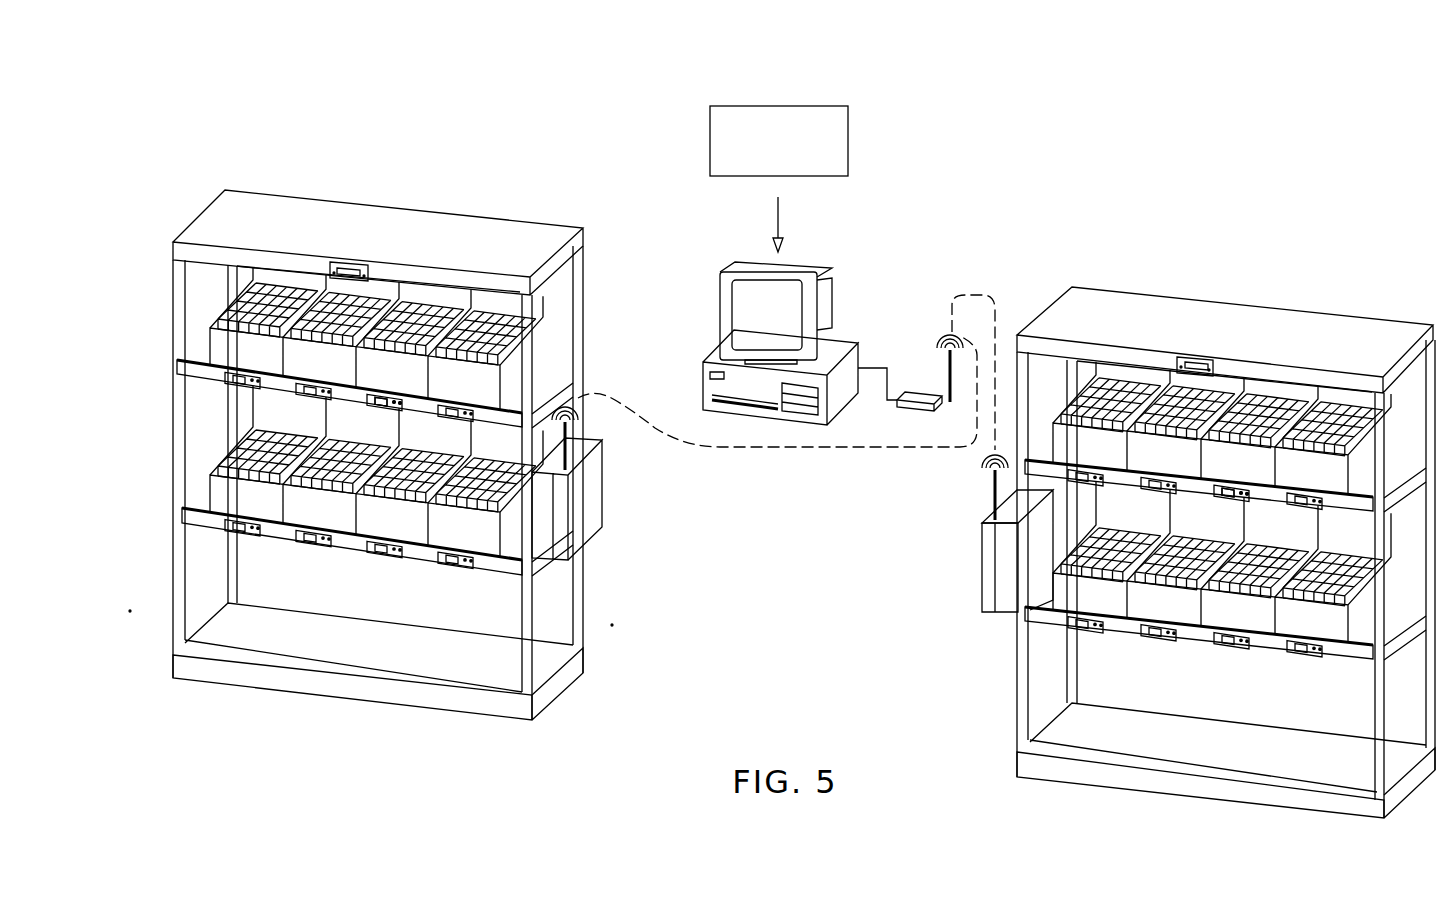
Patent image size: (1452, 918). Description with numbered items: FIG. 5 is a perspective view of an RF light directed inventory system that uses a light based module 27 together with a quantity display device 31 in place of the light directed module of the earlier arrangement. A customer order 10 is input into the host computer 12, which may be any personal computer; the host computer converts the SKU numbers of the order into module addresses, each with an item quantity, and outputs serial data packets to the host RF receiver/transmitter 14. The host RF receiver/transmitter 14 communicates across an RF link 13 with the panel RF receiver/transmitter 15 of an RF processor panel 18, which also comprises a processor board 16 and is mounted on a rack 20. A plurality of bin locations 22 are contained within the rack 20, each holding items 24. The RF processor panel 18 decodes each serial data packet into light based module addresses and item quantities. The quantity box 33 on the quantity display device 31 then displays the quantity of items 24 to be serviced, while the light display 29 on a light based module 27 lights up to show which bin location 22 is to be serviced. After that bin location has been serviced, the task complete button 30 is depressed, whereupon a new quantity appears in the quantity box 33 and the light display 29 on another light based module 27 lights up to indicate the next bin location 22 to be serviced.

The customer order 10 is at (850, 128).
The host computer 12 is at (803, 320).
The RF link 13 is at (640, 412).
The host RF receiver/transmitter 14 is at (930, 397).
The panel RF receiver/transmitter 15 is at (562, 528).
The processor board 16 is at (547, 548).
The RF processor panel 18 is at (627, 492).
The rack 20 is at (582, 318).
The bin location 22 is at (468, 300).
The items 24 is at (398, 392).
The light based module 27 is at (378, 389).
The light display 29 is at (406, 396).
The task complete button 30 is at (446, 318).
The quantity display device 31 is at (336, 262).
The quantity box 33 is at (347, 265).